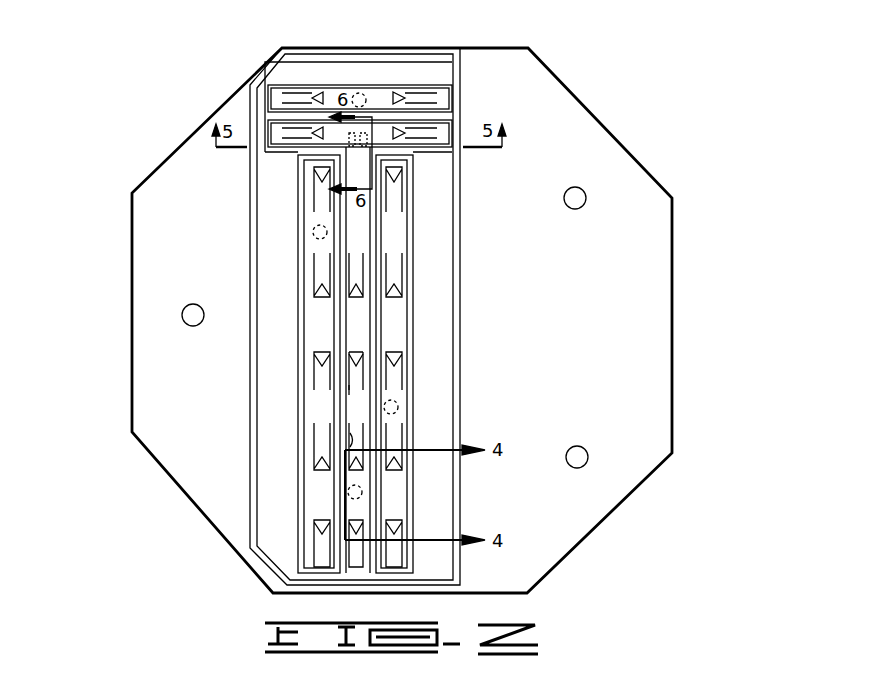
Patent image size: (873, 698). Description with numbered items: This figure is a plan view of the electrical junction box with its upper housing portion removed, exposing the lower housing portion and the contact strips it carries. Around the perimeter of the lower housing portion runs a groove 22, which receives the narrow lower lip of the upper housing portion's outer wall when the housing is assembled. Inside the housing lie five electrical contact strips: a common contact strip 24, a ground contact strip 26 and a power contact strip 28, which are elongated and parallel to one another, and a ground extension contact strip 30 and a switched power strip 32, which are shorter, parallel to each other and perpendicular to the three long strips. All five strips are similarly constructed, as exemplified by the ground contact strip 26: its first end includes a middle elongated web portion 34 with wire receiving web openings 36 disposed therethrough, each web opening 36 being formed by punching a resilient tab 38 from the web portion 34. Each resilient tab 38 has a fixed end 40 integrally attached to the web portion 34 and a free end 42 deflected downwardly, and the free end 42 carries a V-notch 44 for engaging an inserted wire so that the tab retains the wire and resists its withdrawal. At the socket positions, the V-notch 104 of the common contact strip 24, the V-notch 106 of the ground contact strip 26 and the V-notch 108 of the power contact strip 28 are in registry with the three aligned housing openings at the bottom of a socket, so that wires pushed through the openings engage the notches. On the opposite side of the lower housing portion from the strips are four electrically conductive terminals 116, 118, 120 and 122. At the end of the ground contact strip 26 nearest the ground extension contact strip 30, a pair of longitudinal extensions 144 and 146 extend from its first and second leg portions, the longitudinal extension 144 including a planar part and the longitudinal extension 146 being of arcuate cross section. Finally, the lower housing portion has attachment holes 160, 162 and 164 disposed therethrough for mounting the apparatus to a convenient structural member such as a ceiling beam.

The groove 22 is at (460, 48).
The common contact strip 24 is at (317, 558).
The ground contact strip 26 is at (356, 562).
The power contact strip 28 is at (392, 565).
The ground extension contact strip 30 is at (442, 133).
The switched power strip 32 is at (441, 97).
The middle elongated web portion 34 is at (348, 481).
The wire receiving web opening 36 is at (348, 440).
The resilient tab 38 is at (355, 387).
The fixed end 40 is at (356, 392).
The free end 42 is at (356, 364).
The V-notch 44 is at (352, 354).
The V-notch of common contact strip 104 is at (318, 527).
The V-notch of ground contact strip 106 is at (353, 528).
The V-notch of power contact strip 108 is at (393, 528).
The electrically conductive terminal 116 is at (362, 490).
The electrically conductive terminal 118 is at (400, 403).
The electrically conductive terminal 120 is at (313, 231).
The electrically conductive terminal 122 is at (359, 93).
The longitudinal extension 144 is at (290, 101).
The longitudinal extension 146 is at (370, 140).
The attachment hole 160 is at (182, 315).
The attachment hole 162 is at (582, 444).
The attachment hole 164 is at (578, 190).